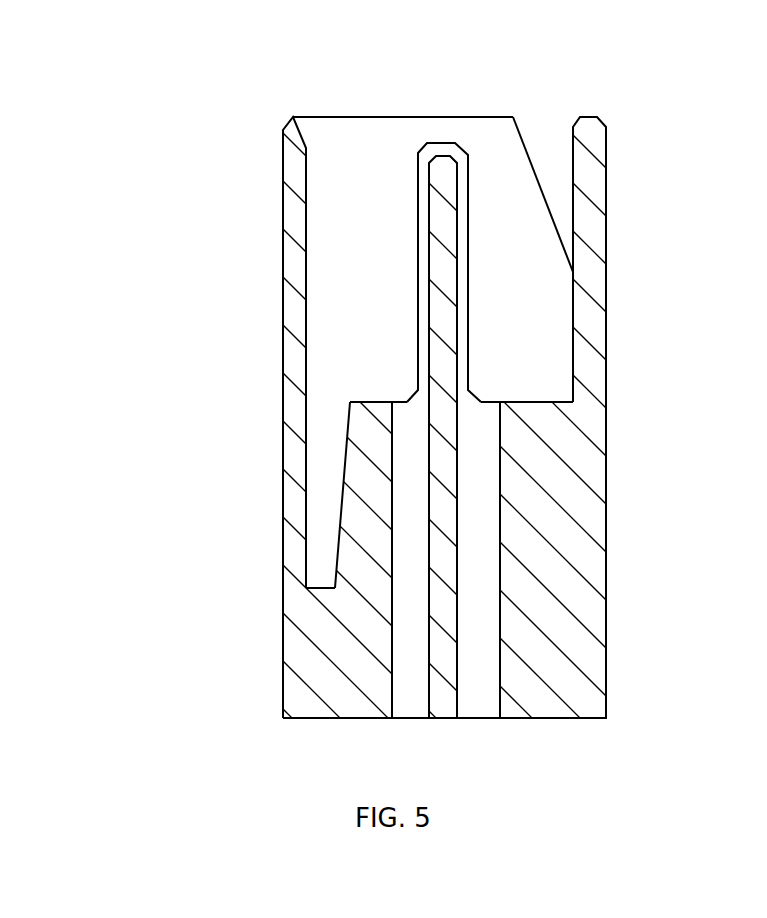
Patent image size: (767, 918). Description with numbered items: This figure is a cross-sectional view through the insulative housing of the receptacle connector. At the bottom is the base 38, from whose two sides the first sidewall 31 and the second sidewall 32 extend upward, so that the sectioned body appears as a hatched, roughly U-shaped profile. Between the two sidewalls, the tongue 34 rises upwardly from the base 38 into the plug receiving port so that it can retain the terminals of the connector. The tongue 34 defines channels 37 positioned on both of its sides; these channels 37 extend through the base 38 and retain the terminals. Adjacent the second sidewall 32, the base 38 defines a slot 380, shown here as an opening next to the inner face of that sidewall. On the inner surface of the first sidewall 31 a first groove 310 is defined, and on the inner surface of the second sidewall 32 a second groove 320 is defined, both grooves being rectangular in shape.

The first sidewall 31 is at (590, 193).
The first grooves 310 is at (577, 295).
The second sidewall 32 is at (300, 297).
The second grooves 320 is at (313, 367).
The tongue 34 is at (435, 147).
The channels 37 is at (407, 635).
The slot 380 is at (328, 560).
The base 38 is at (548, 540).